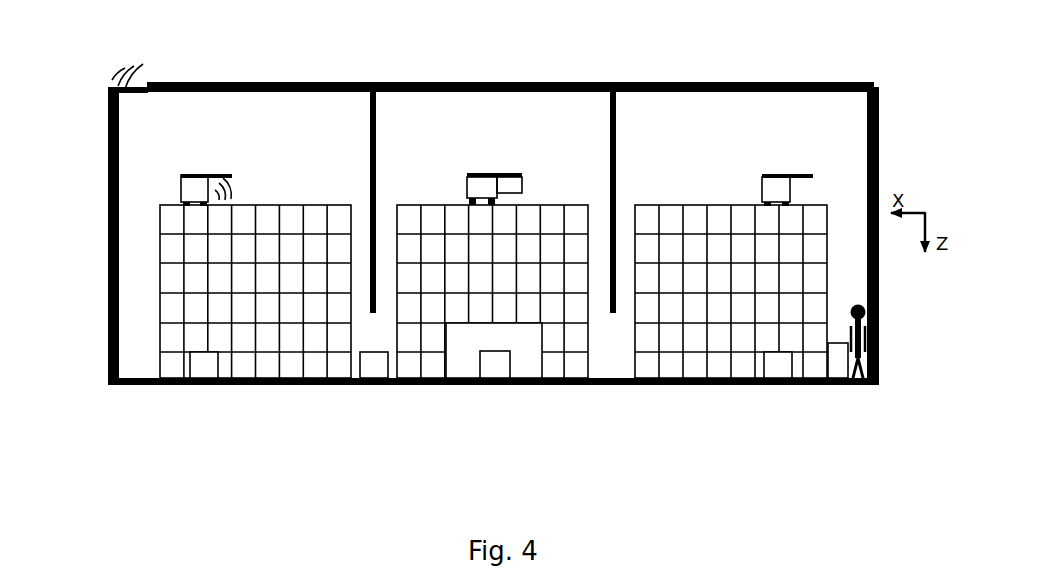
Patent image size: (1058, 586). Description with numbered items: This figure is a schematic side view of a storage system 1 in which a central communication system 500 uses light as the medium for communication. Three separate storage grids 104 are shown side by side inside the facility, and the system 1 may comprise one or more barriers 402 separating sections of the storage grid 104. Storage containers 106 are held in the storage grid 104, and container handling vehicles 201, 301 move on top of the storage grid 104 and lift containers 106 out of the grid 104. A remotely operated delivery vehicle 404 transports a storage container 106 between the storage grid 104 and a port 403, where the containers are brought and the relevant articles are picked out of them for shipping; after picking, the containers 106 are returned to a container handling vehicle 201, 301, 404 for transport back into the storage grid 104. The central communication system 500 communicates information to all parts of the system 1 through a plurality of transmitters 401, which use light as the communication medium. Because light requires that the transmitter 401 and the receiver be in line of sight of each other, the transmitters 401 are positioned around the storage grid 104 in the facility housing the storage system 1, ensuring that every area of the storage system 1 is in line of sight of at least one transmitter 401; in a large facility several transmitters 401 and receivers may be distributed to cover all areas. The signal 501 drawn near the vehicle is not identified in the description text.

The storage system 1 is at (843, 38).
The central communication system 500 is at (103, 63).
The transmitter 401 is at (162, 83).
The container handling vehicle 201 is at (285, 130).
The container handling vehicle 301 is at (200, 173).
The storage container 106 is at (508, 173).
The barrier 402 is at (366, 303).
The port 403 is at (837, 340).
The wireless signal 501 is at (227, 193).
The storage grid 104 is at (342, 353).
The remotely operated delivery vehicle 404 is at (393, 377).